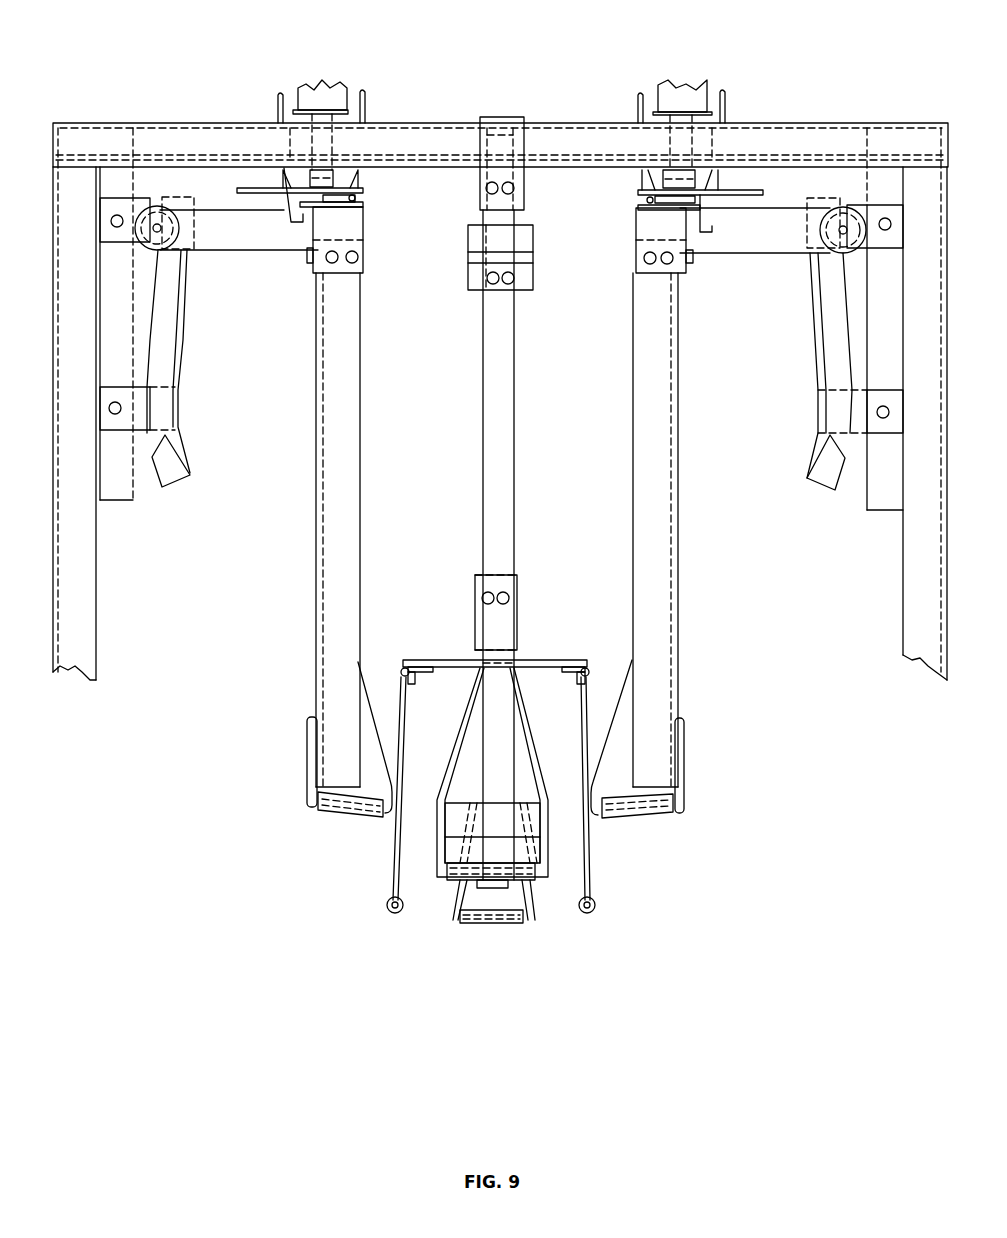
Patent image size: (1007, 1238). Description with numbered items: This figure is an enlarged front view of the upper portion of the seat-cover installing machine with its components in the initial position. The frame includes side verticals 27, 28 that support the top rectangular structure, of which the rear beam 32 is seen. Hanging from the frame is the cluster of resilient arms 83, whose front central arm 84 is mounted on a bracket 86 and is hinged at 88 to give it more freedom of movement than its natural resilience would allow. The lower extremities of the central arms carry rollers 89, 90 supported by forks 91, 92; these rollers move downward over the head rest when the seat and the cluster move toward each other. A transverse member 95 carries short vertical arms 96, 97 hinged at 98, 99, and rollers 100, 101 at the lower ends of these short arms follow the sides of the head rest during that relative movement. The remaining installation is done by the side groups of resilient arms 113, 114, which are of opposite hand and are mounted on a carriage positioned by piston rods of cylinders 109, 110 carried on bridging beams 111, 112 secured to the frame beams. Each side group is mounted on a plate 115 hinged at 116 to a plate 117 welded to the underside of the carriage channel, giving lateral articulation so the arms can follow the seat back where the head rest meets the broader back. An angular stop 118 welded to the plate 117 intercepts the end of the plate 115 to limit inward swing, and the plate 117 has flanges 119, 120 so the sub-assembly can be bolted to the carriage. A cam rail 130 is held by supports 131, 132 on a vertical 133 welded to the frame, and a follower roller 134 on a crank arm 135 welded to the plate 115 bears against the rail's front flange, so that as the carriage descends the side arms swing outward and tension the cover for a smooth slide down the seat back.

The vertical 27 is at (905, 620).
The vertical 28 is at (96, 627).
The rear beam 32 is at (823, 130).
The cluster of resilient arms 83 is at (494, 846).
The front central arm 84 is at (514, 368).
The bracket 86 is at (487, 205).
The hinge 88 is at (470, 258).
The roller 89 is at (530, 905).
The roller 90 is at (491, 946).
The fork 91 is at (530, 745).
The fork 92 is at (453, 905).
The transverse member 95 is at (452, 670).
The short vertical arm 96 is at (585, 715).
The short vertical arm 97 is at (405, 715).
The hinge 98 is at (580, 668).
The hinge 99 is at (410, 668).
The roller 100 is at (589, 914).
The roller 101 is at (393, 914).
The cylinder 109 is at (672, 83).
The cylinder 110 is at (322, 82).
The bridging beam 111 is at (724, 92).
The bridging beam 112 is at (280, 97).
The side group of resilient arms 113 is at (685, 628).
The side group of resilient arms 114 is at (312, 627).
The plate 115 is at (640, 215).
The hinge 116 is at (640, 208).
The plate 117 is at (648, 200).
The angular stop 118 is at (705, 232).
The flange 119 is at (722, 187).
The flange 120 is at (643, 186).
The cam rail 130 is at (818, 368).
The support 131 is at (858, 200).
The support 132 is at (858, 430).
The vertical 133 is at (885, 510).
The follower roller 134 is at (852, 255).
The crank arm 135 is at (750, 255).